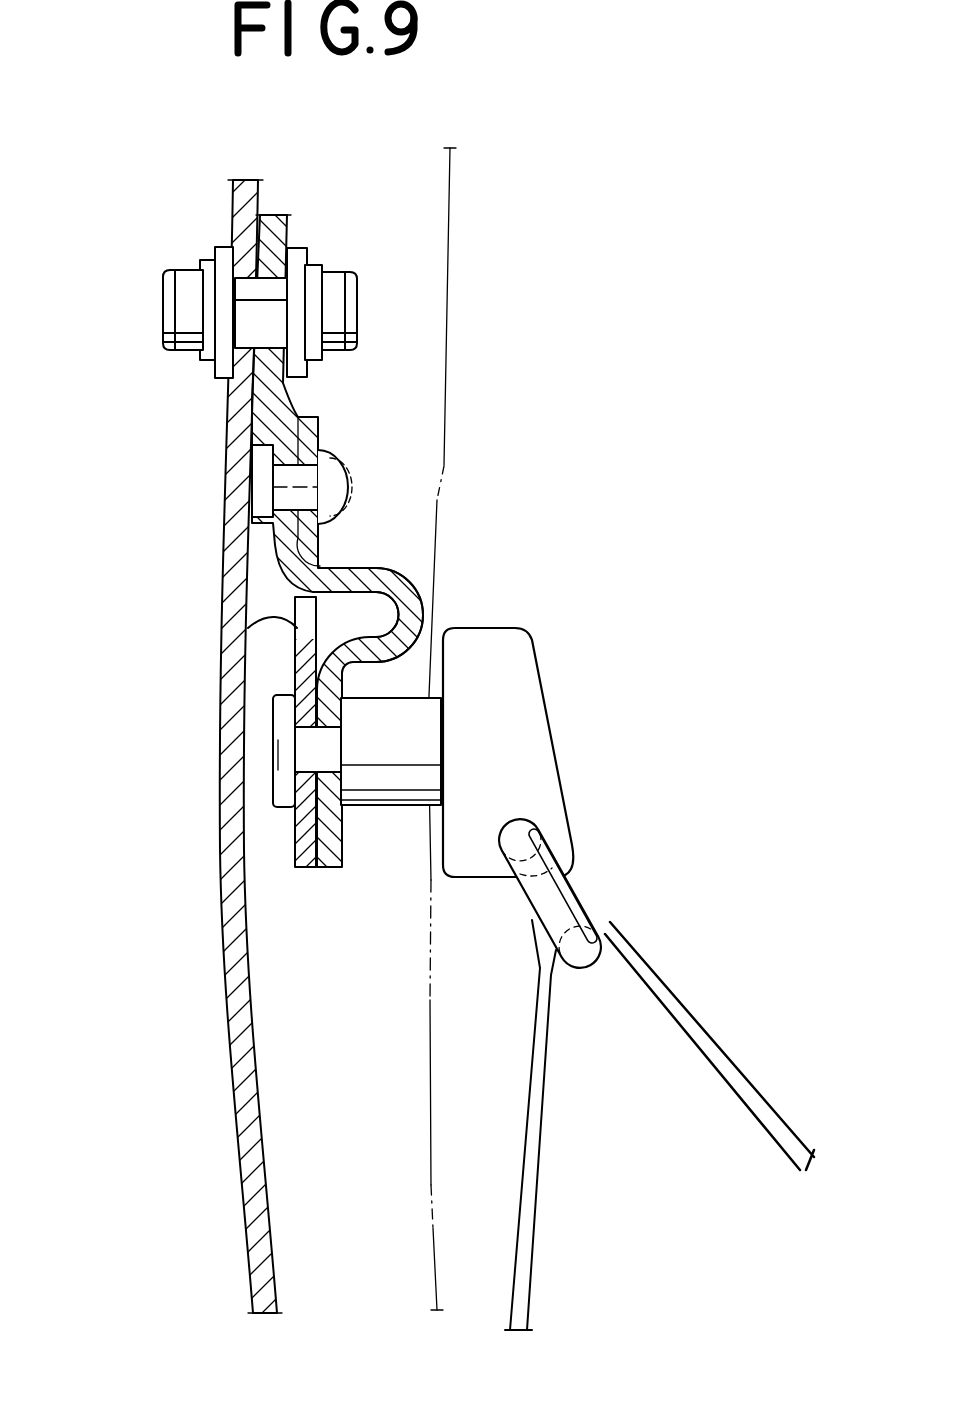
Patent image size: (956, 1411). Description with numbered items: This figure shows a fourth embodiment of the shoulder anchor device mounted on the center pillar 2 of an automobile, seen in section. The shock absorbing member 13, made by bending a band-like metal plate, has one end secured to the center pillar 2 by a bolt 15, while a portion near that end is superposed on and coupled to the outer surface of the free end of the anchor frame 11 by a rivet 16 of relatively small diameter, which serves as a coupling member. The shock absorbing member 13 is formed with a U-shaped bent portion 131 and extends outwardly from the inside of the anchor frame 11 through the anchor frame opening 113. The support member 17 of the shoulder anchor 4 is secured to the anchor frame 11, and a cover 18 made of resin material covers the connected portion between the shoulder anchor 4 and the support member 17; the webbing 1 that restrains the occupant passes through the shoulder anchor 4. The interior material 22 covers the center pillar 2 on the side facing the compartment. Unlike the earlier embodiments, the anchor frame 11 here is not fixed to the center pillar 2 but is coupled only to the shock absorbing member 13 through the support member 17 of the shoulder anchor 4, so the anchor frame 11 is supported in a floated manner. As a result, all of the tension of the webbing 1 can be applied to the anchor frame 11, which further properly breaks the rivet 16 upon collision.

The webbing 1 is at (678, 1004).
The center pillar 2 is at (233, 1135).
The shoulder anchor 4 is at (533, 917).
The anchor frame 11 is at (290, 832).
The anchor frame opening 113 is at (248, 628).
The shock absorbing member 13 is at (364, 565).
The U-shaped bent portion 131 is at (409, 598).
The bolt 15 is at (165, 298).
The rivet 16 is at (366, 464).
The support member 17 is at (381, 783).
The cover 18 is at (535, 718).
The interior material 22 is at (447, 215).